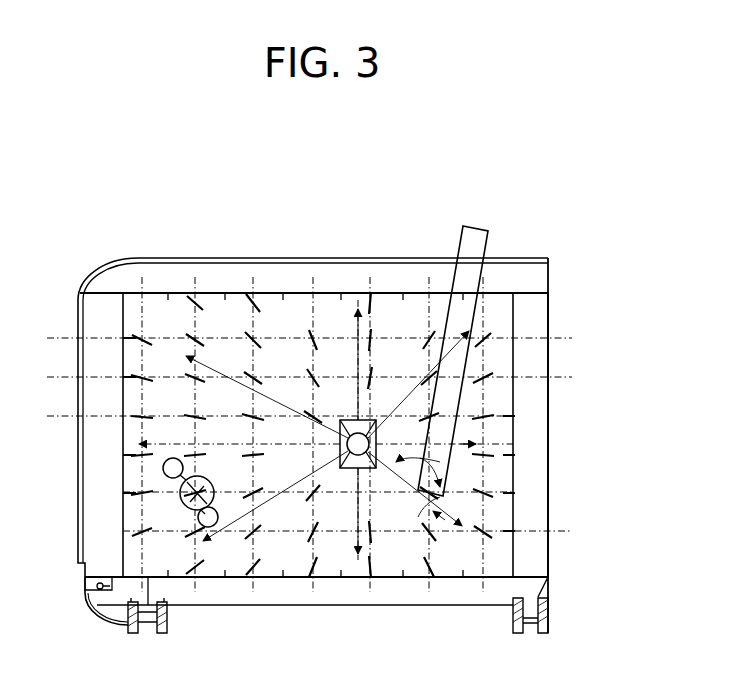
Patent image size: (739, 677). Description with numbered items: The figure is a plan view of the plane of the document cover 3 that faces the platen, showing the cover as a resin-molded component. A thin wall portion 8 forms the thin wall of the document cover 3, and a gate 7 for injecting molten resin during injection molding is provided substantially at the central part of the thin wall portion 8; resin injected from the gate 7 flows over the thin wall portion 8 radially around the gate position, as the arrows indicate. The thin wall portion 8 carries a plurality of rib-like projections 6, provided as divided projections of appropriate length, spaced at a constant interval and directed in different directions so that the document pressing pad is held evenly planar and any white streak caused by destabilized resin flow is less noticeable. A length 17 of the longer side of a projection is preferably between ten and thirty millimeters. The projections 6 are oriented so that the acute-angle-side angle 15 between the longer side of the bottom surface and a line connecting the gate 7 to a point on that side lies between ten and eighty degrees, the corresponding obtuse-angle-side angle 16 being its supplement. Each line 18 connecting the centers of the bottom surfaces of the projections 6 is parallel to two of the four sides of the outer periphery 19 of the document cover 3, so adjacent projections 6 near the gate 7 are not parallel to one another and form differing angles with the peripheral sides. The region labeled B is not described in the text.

The document cover 3 is at (400, 281).
The rib-like projections 6 is at (132, 443).
The gate 7 is at (357, 419).
The thin wall portion 8 is at (227, 390).
The acute-angle-side angle 15 is at (440, 497).
The obtuse-angle-side angle 16 is at (440, 462).
The length of the longer side 17 is at (438, 220).
The line connecting the centers of the bottom surfaces 18 is at (553, 338).
The outer periphery 19 is at (167, 302).
The container B is at (186, 508).